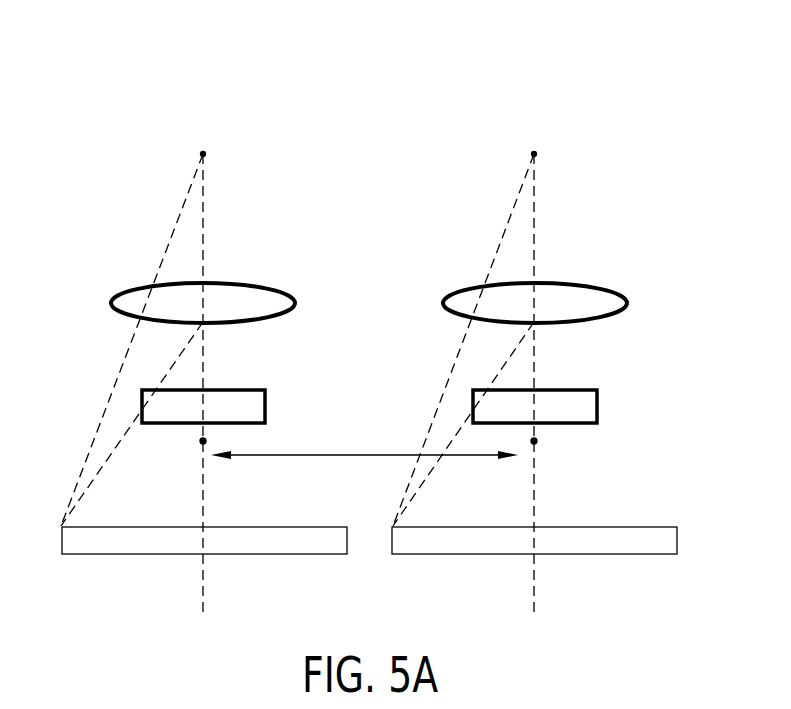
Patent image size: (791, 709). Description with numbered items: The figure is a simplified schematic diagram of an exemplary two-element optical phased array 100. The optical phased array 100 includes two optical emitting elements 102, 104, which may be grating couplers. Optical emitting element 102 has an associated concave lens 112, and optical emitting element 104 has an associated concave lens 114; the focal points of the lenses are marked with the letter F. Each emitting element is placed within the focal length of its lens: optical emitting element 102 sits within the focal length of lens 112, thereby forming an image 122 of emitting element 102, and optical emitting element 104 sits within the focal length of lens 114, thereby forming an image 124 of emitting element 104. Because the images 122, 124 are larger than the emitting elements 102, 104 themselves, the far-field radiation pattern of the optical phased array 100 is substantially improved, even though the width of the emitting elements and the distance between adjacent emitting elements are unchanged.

The two-element optical phased array 100 is at (608, 77).
The optical emitting element 102 is at (142, 410).
The optical emitting element 104 is at (597, 408).
The concave lens 112 is at (112, 302).
The concave lens 114 is at (627, 302).
The image 122 is at (93, 554).
The image 124 is at (667, 554).